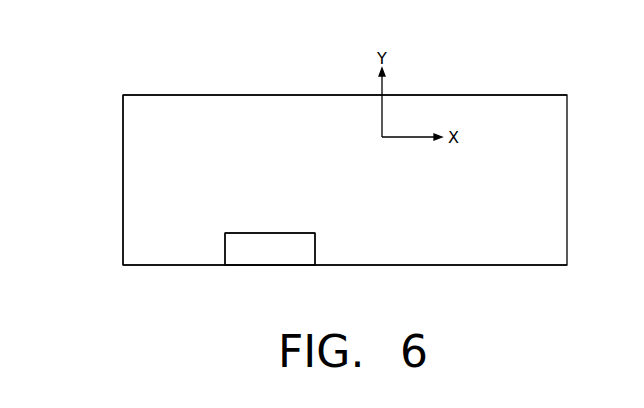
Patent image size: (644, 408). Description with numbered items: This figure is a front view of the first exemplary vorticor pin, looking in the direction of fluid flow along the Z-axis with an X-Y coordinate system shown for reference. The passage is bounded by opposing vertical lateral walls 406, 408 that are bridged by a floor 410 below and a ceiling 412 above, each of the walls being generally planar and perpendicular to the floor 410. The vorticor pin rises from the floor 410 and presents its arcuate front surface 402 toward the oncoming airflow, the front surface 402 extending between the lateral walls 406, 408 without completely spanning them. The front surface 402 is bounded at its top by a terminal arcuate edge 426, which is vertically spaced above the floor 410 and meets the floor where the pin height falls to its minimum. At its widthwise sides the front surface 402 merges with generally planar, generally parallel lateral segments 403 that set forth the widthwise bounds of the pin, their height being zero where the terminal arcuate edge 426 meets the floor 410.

The front surface 402 is at (265, 265).
The lateral segments 403 is at (225, 252).
The lateral wall 406 is at (558, 172).
The lateral wall 408 is at (123, 158).
The floor 410 is at (443, 264).
The ceiling 412 is at (495, 95).
The terminal arcuate edge 426 is at (265, 232).